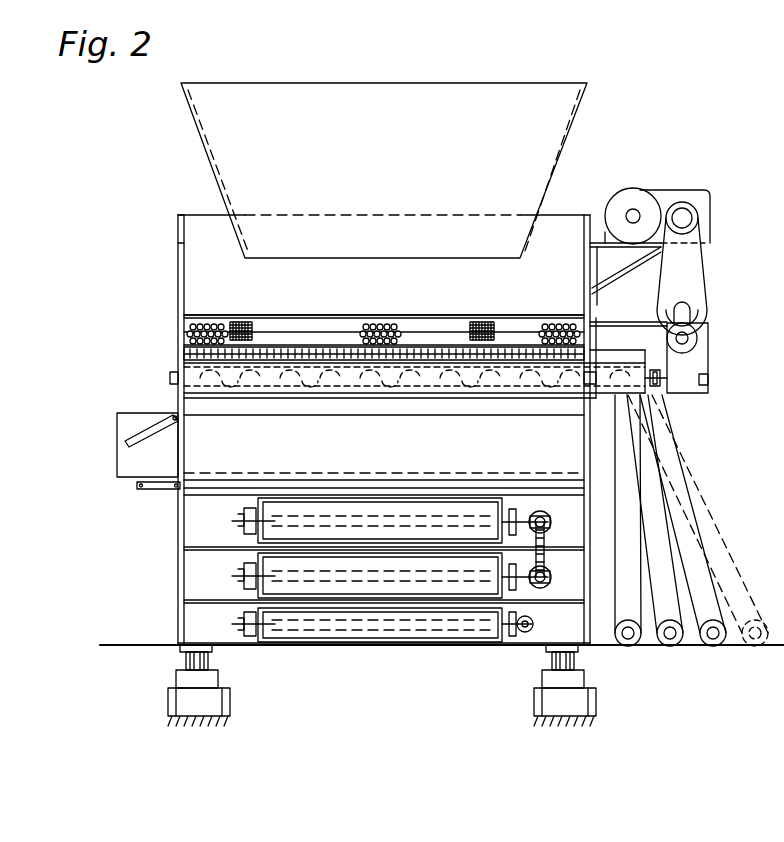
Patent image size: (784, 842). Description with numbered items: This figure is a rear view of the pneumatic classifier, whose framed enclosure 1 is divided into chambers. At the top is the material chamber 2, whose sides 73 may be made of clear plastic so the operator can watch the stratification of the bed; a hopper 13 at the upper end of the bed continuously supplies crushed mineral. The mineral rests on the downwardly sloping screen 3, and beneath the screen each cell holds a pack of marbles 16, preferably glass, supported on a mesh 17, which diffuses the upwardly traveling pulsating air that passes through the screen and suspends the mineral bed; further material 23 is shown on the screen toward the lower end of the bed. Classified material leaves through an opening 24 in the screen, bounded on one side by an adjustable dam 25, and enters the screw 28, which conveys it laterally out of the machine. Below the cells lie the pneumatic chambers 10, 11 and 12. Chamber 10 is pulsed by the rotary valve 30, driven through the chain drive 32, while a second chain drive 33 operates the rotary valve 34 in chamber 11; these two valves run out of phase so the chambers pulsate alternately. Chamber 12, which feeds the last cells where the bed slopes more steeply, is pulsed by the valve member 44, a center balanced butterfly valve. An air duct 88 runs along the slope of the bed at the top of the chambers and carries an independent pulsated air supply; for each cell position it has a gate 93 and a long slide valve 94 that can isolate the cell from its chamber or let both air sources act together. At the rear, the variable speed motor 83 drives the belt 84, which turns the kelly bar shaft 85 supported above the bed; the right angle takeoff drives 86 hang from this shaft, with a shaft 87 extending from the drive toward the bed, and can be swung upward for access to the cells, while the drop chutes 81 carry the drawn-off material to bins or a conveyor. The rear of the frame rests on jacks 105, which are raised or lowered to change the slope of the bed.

The framed enclosure 1 is at (178, 216).
The material chamber 2 is at (178, 270).
The downwardly sloping screen 3 is at (300, 328).
The pneumatic chamber 10 is at (392, 511).
The pneumatic chamber 11 is at (390, 567).
The pneumatic chamber 12 is at (366, 618).
The hopper 13 is at (369, 70).
The pack of marbles 16 is at (383, 332).
The mesh 17 is at (352, 352).
The nuts on conveyor 23 is at (540, 312).
The opening 24 is at (268, 350).
The adjustable dam 25 is at (441, 322).
The screw 28 is at (378, 396).
The rotary valve 30 is at (268, 530).
The chain drive 32 is at (552, 514).
The second chain drive 33 is at (548, 560).
The rotary valve 34 is at (268, 586).
The valve member 44 is at (268, 628).
The sides 73 is at (178, 243).
The drop chutes 81 is at (700, 590).
The variable speed motor 83 is at (628, 205).
The belt 84 is at (690, 266).
The kelly bar shaft 85 is at (685, 336).
The right angle takeoff drives 86 is at (690, 360).
The shaft 87 is at (656, 388).
The air duct 88 is at (118, 432).
The gate 93 is at (160, 437).
The long slide valve 94 is at (150, 490).
The jacks 105 is at (180, 700).